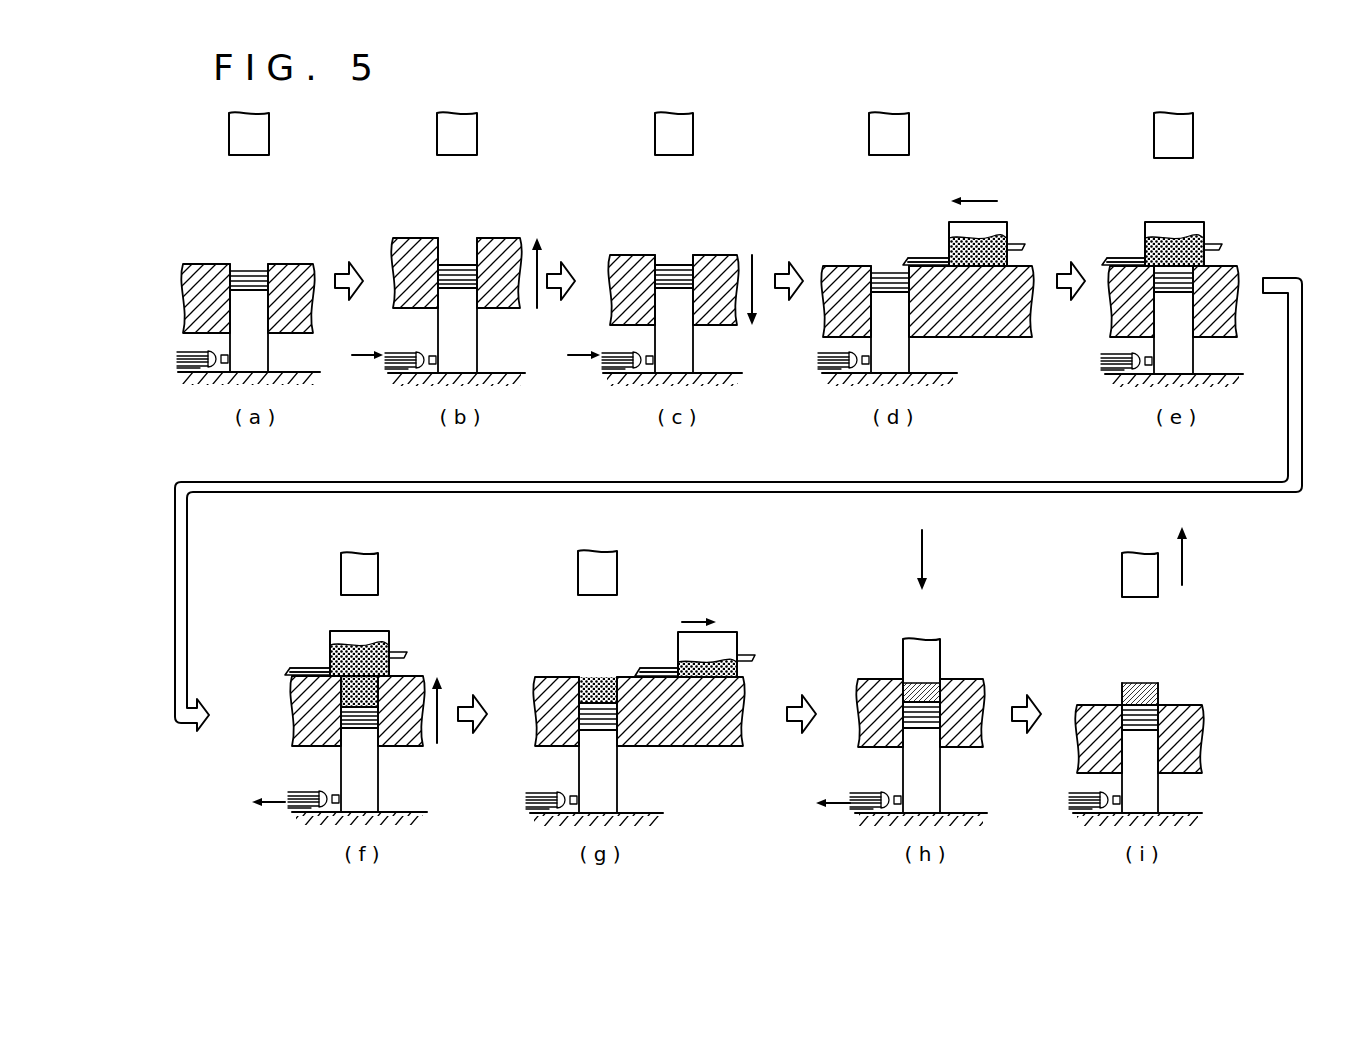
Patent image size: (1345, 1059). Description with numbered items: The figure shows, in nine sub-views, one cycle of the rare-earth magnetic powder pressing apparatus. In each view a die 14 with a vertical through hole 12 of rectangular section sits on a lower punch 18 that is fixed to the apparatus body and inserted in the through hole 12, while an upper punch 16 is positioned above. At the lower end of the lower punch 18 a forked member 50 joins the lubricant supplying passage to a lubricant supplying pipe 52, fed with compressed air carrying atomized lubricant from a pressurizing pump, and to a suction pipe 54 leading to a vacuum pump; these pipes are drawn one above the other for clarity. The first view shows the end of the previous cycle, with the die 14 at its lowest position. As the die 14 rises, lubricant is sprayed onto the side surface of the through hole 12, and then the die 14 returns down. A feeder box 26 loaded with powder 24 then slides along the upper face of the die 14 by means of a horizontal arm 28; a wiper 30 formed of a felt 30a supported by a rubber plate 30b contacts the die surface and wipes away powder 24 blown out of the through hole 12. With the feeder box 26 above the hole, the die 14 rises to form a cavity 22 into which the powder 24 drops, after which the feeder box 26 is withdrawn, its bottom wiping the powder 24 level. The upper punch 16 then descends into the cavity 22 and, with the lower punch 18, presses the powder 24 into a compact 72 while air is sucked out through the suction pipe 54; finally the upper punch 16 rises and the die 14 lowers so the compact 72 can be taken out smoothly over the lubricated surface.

The through hole 12 is at (232, 310).
The die 14 is at (205, 270).
The upper punch 16 is at (269, 142).
The lower punch 18 is at (270, 358).
The cavity 22 is at (375, 730).
The powder 24 is at (990, 240).
The feeder box 26 is at (990, 222).
The arm 28 is at (1018, 245).
The wiper 30 is at (873, 213).
The felt 30a is at (910, 257).
The rubber plate 30b is at (938, 257).
The forked member 50 is at (210, 368).
The lubricant supplying pipe 52 is at (190, 352).
The suction pipe 54 is at (177, 368).
The compact 72 is at (926, 691).